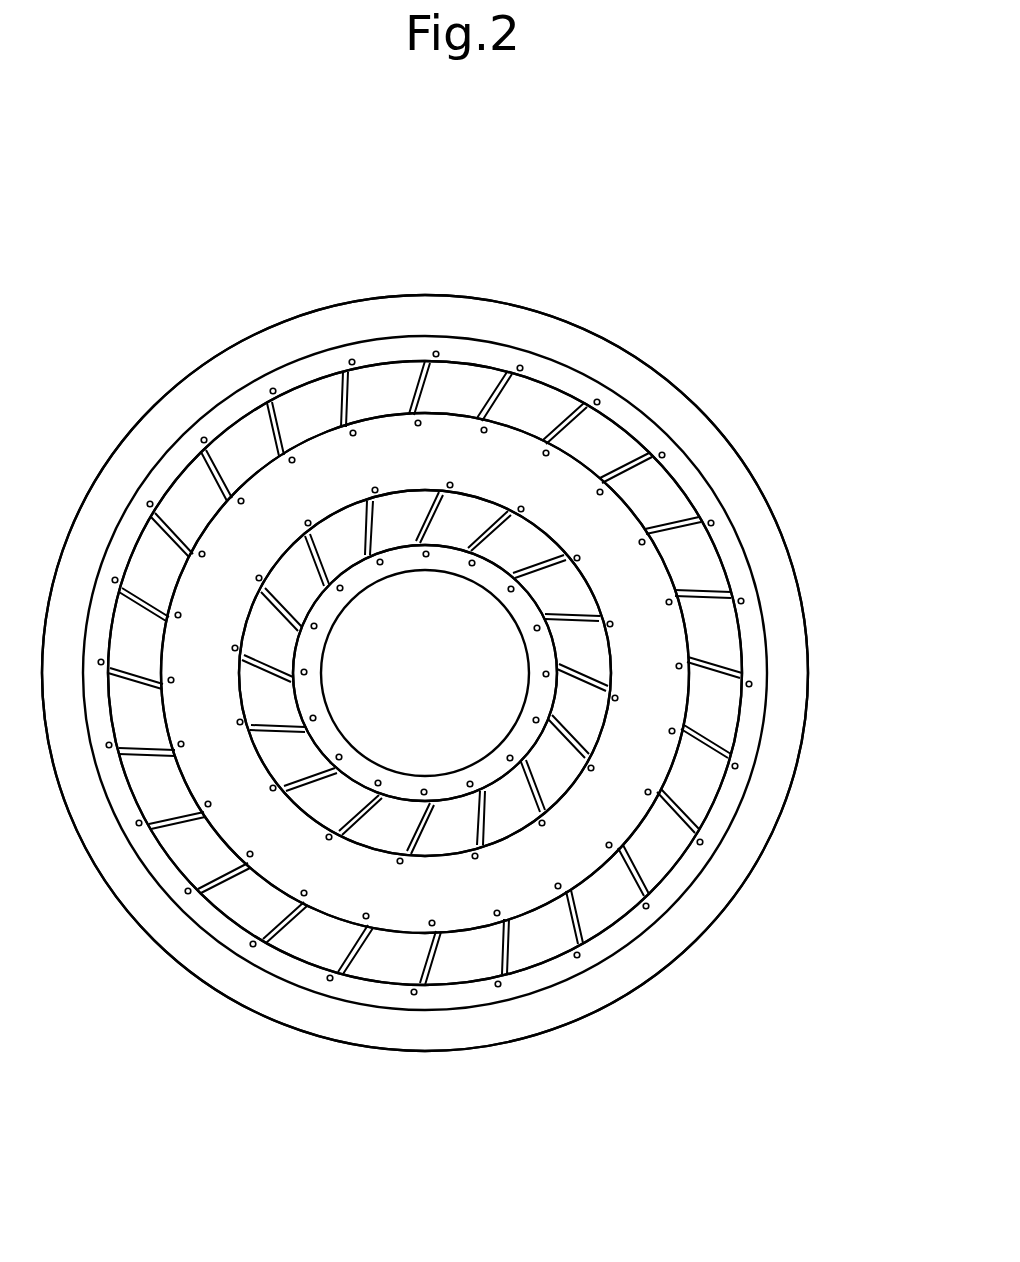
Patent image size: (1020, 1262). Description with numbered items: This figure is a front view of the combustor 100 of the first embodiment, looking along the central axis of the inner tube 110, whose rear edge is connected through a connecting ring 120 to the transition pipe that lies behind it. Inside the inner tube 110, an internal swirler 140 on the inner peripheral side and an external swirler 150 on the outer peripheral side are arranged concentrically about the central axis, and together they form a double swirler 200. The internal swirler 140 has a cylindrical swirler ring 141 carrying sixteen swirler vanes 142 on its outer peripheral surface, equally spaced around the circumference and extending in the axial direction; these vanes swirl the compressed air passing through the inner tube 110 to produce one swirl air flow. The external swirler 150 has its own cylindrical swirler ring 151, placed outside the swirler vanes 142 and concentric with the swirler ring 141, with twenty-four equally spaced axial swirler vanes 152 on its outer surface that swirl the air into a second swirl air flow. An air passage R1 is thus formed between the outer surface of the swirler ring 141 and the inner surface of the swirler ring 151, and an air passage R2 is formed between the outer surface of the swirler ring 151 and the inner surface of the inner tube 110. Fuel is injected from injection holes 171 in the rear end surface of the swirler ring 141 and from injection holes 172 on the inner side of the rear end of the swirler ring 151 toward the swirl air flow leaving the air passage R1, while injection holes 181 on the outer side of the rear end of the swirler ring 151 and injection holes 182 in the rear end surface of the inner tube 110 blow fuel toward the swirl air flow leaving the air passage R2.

The fan 100 is at (437, 221).
The inner tube 110 is at (548, 372).
The connecting ring 120 is at (475, 313).
The internal swirler 140 is at (572, 700).
The swirler ring 141 is at (533, 743).
The swirler vanes 142 is at (547, 810).
The external swirler 150 is at (700, 627).
The swirler ring 151 is at (642, 578).
The swirler vanes 152 is at (632, 475).
The injection holes 171 is at (472, 566).
The injection holes 172 is at (453, 485).
The injection holes 181 is at (482, 431).
The injection holes 182 is at (517, 368).
The double swirler 200 is at (307, 398).
The air passage R1 is at (597, 657).
The air passage R2 is at (595, 438).